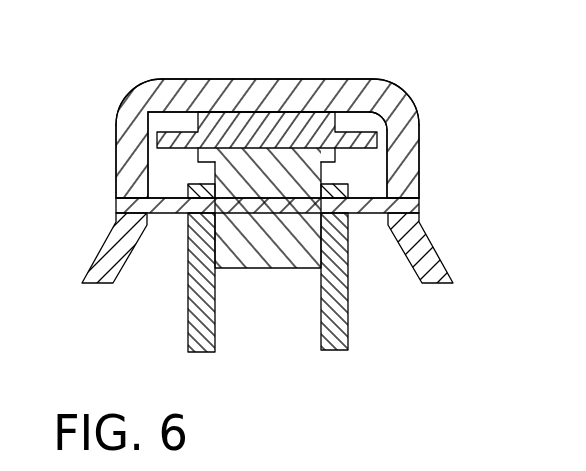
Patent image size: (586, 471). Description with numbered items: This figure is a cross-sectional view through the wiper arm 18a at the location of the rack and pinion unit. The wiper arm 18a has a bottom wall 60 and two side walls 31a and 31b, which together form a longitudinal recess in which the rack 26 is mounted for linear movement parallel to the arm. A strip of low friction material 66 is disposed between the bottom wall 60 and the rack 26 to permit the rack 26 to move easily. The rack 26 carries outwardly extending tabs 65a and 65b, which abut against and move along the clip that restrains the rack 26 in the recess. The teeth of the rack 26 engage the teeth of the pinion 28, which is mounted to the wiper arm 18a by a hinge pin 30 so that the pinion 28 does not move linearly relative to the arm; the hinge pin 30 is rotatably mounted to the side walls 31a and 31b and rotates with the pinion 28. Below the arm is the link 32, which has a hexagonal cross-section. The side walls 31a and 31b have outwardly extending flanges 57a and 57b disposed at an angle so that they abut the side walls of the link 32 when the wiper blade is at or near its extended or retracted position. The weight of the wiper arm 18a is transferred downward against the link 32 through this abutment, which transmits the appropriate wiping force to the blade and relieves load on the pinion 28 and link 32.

The wiper arm 18a is at (392, 58).
The rack 26 is at (249, 114).
The pinion 28 is at (288, 240).
The hinge pin 30 is at (369, 213).
The side wall 31a is at (409, 170).
The side wall 31b is at (127, 146).
The link 32 is at (200, 318).
The outwardly extending flange 57a is at (427, 243).
The outwardly extending flange 57b is at (110, 257).
The bottom wall 60 is at (211, 98).
The tab 65a is at (403, 107).
The tab 65b is at (183, 147).
The strip of low friction material 66 is at (287, 98).